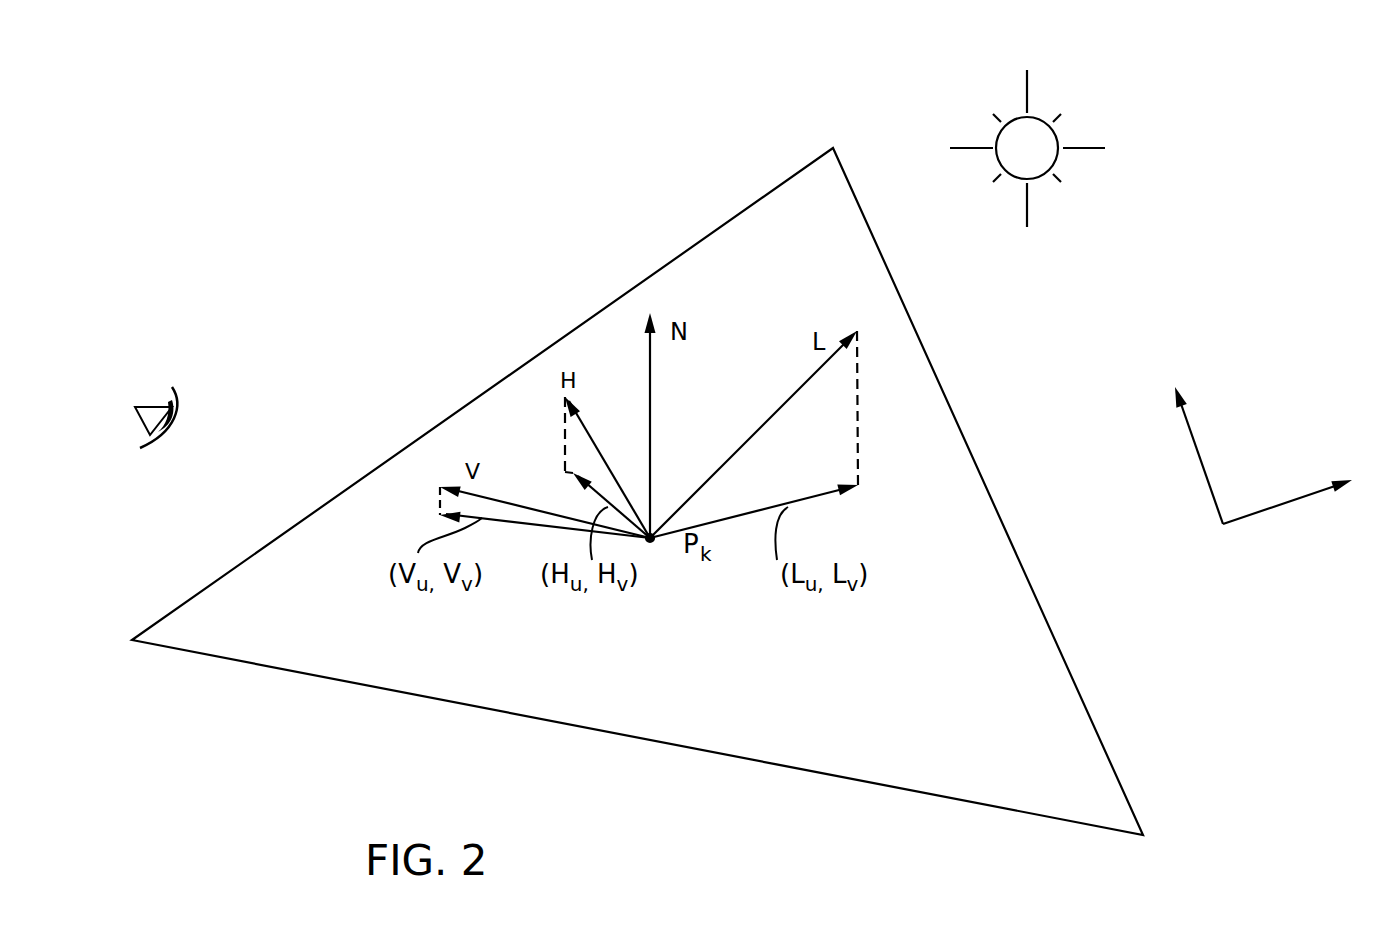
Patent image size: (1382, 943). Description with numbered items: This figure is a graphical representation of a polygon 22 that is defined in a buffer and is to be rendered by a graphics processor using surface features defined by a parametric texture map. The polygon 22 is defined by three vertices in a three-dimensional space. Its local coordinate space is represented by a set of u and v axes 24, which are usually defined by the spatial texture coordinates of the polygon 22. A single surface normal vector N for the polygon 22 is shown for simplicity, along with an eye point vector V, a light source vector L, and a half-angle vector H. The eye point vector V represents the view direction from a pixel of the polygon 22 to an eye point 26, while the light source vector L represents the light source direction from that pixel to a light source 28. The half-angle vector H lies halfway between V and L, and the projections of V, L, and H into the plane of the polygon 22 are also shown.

The polygon 22 is at (898, 786).
The u and v axes 24 is at (1285, 503).
The eye point 26 is at (148, 372).
The light source 28 is at (1092, 70).